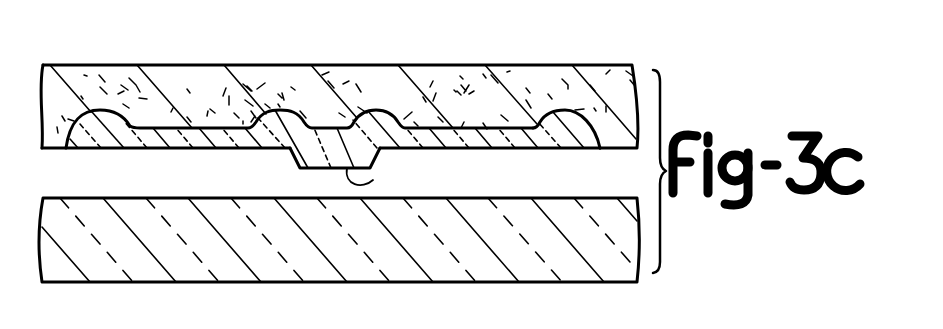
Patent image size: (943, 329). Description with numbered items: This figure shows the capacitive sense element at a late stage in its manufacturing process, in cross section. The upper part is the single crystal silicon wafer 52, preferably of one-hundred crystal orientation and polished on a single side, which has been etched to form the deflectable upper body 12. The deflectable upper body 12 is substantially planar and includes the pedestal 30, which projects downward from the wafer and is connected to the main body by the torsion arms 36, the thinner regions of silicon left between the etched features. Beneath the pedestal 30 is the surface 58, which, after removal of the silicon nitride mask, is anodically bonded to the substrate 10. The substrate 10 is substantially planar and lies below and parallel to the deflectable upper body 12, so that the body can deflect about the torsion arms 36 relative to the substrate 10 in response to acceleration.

The substrate 10 is at (563, 210).
The deflectable upper body 12 is at (553, 110).
The pedestal 30 is at (323, 147).
The torsion arms 36 is at (173, 110).
The single crystal silicon wafer 52 is at (597, 73).
The surface 58 is at (379, 172).